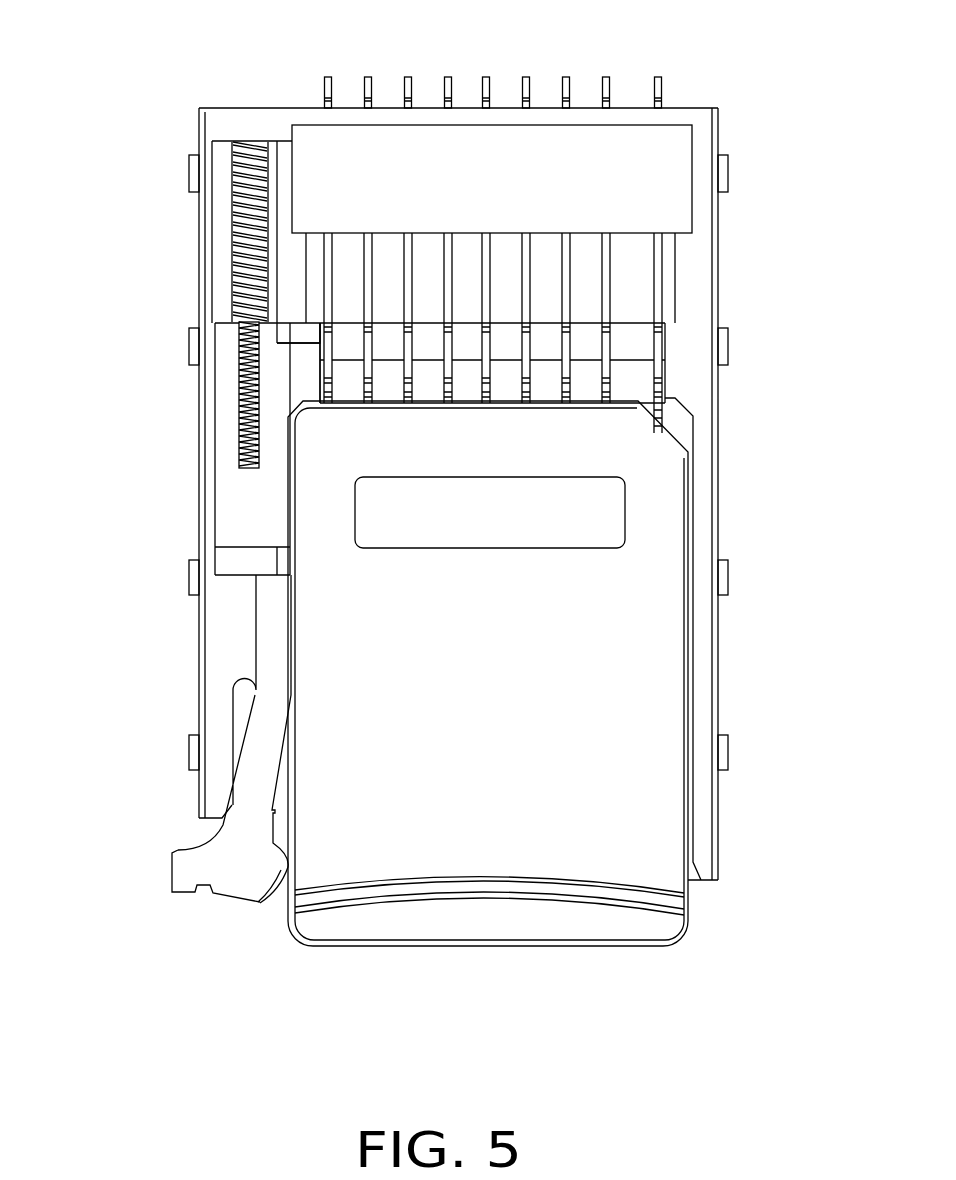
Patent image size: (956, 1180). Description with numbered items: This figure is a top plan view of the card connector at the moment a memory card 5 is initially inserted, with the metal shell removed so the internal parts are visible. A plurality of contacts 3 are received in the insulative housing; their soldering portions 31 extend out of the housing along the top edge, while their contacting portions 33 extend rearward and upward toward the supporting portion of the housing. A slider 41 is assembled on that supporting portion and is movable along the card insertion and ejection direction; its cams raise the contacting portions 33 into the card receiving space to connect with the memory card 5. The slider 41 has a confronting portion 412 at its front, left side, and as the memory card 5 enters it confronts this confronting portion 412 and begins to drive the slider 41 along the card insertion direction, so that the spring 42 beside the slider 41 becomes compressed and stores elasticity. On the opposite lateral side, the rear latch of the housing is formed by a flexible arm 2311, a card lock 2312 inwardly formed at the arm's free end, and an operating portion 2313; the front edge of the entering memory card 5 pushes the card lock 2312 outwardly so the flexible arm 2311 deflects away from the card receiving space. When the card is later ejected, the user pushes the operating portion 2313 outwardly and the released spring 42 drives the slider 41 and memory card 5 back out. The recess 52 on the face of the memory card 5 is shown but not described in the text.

The soldering portions 31 is at (605, 78).
The contacts 3 is at (605, 273).
The contacting portions 33 is at (602, 393).
The spring 42 is at (245, 237).
The slider 41 is at (255, 514).
The confronting portion 412 is at (295, 407).
The memory card 5 is at (555, 673).
The recess of card 52 is at (590, 512).
The flexible arm 2311 is at (273, 628).
The card lock 2312 is at (285, 870).
The operating portion 2313 is at (183, 870).